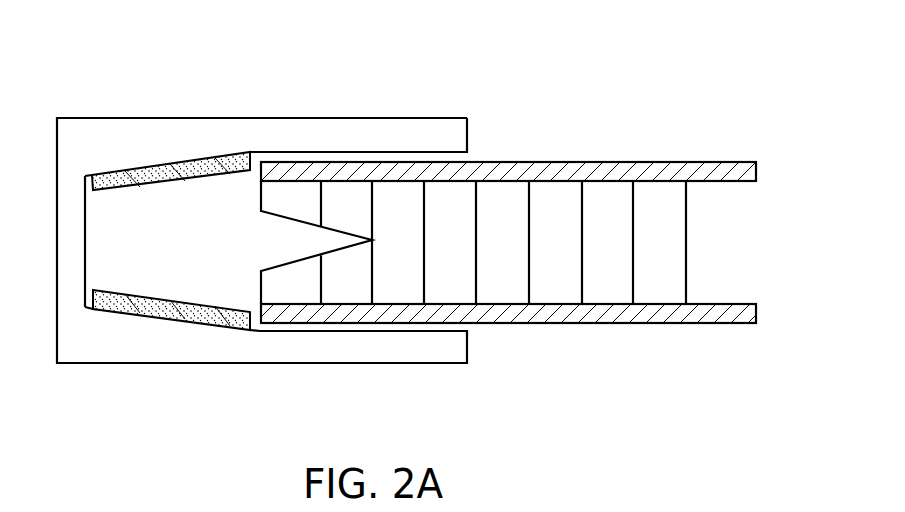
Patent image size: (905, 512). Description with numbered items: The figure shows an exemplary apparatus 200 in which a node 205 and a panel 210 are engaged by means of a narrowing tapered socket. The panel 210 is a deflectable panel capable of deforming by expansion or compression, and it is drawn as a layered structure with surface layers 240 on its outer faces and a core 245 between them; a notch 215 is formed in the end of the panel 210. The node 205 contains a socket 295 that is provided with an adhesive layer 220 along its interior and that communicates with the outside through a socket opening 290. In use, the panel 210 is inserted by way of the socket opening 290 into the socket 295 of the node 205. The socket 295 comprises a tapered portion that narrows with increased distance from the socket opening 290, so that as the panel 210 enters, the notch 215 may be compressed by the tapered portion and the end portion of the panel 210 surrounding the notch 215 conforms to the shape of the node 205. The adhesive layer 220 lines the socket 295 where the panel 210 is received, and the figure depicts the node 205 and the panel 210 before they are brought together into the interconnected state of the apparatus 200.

The apparatus 200 is at (423, 222).
The node 205 is at (155, 118).
The panel 210 is at (582, 277).
The notch 215 is at (275, 233).
The adhesive layer 220 is at (126, 195).
The surface layers 240 is at (495, 315).
The core 245 is at (750, 185).
The socket opening 290 is at (547, 247).
The socket 295 is at (100, 272).